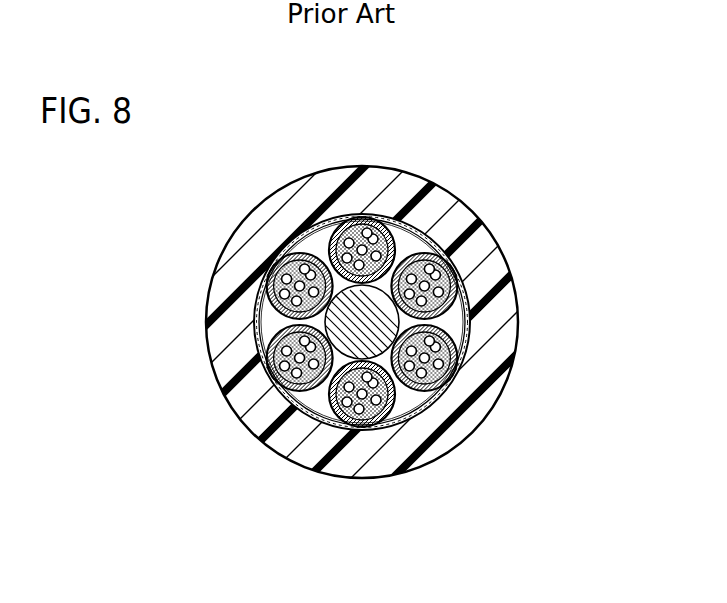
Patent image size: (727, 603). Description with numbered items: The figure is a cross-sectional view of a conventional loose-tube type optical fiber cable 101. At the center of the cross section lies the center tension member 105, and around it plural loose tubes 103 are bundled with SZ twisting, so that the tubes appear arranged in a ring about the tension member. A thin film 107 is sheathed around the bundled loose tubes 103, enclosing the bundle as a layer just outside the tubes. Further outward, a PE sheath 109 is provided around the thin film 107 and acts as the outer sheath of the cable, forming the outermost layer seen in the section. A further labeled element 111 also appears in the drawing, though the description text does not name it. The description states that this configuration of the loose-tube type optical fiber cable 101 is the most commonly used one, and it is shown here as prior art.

The loose-tube type optical fiber cable 101 is at (541, 256).
The loose tubes 103 is at (300, 247).
The center tension member 105 is at (467, 320).
The thin film 107 is at (258, 337).
The PE sheath 109 is at (417, 437).
The tension member 111 is at (399, 324).